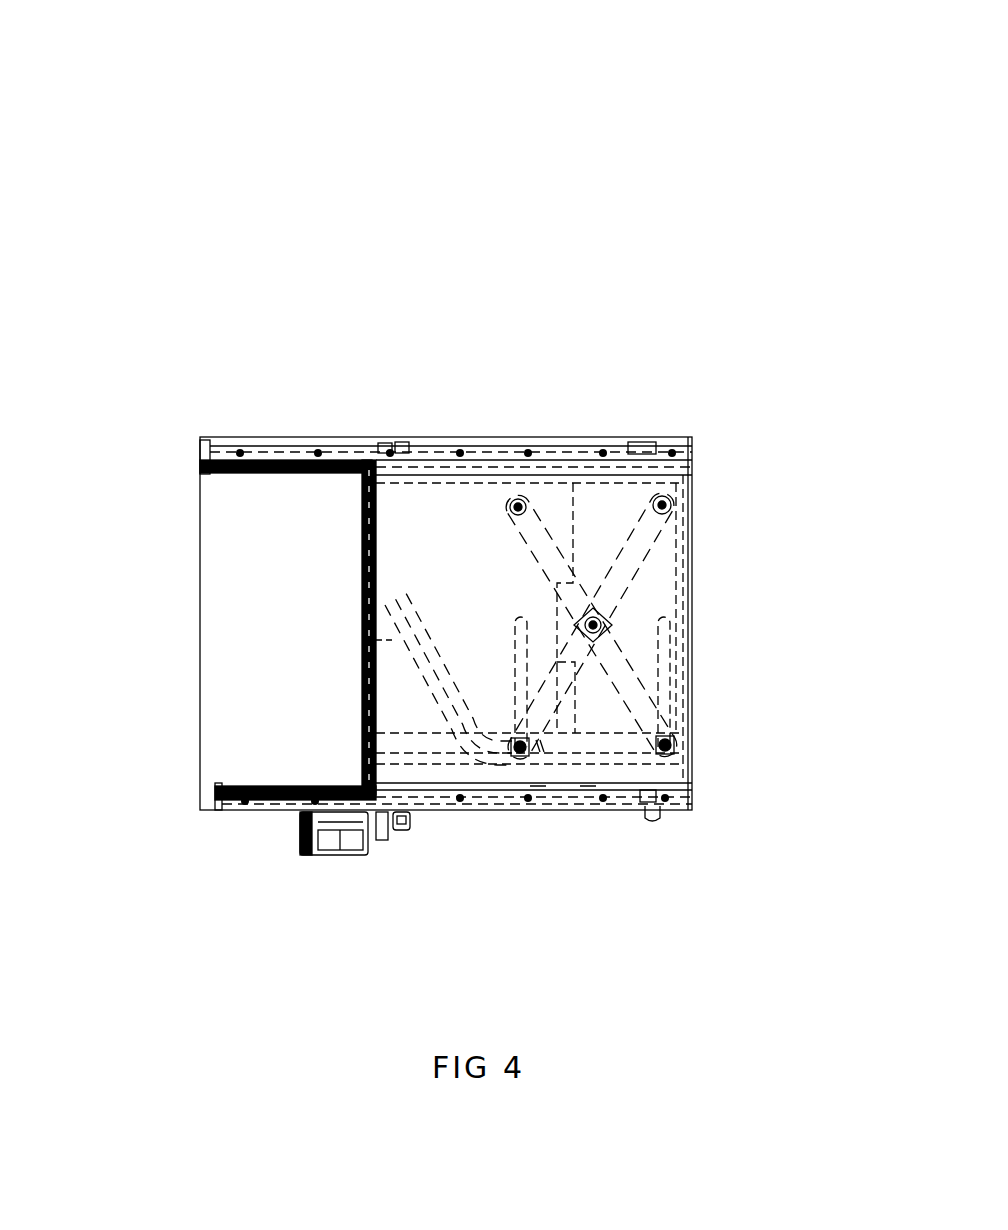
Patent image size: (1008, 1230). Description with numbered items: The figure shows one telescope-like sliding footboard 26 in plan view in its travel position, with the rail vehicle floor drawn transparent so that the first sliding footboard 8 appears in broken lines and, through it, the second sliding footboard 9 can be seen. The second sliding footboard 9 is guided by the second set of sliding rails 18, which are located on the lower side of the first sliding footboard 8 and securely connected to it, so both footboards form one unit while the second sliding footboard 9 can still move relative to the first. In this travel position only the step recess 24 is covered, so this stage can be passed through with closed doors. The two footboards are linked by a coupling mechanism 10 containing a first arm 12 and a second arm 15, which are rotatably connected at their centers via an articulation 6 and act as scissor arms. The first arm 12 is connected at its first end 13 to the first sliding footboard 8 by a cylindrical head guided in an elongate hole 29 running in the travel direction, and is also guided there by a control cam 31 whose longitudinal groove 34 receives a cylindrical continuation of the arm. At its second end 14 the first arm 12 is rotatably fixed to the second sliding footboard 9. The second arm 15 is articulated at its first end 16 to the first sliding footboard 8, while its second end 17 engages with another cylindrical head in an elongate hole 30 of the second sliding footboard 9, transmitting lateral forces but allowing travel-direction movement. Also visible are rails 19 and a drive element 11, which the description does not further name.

The telescope-like sliding footboard 26 is at (731, 196).
The side rails 19 is at (200, 468).
The step recess 24 is at (258, 668).
The second set of sliding rails 18 is at (385, 462).
The second sliding footboard 9 is at (427, 498).
The elongate hole 30 is at (516, 617).
The second end 14 is at (518, 498).
The coupling mechanism 10 is at (650, 490).
The first end 16 is at (690, 502).
The second arm 15 is at (664, 542).
The first sliding footboard 8 is at (678, 584).
The articulation 6 is at (603, 623).
The first arm 12 is at (636, 644).
The elongate hole 29 is at (672, 690).
The first end 13 is at (676, 744).
The second end 17 is at (528, 800).
The control cam 31 is at (385, 610).
The longitudinal groove 34 is at (380, 638).
The drive motor 11 is at (328, 855).